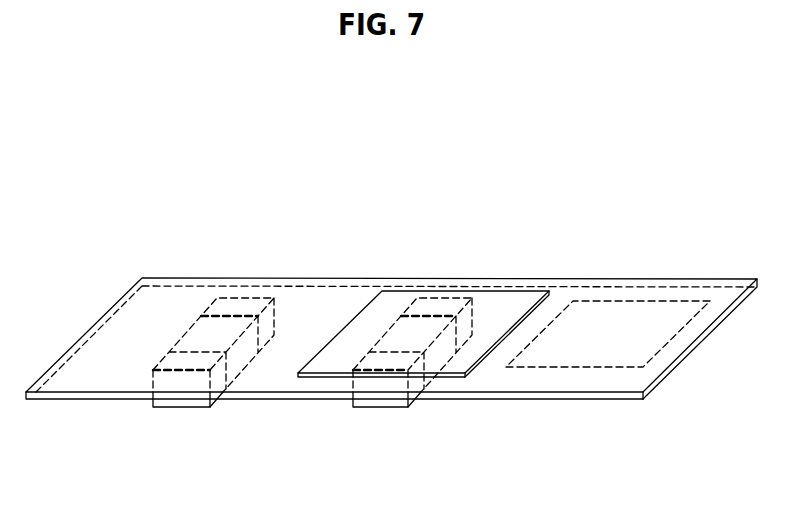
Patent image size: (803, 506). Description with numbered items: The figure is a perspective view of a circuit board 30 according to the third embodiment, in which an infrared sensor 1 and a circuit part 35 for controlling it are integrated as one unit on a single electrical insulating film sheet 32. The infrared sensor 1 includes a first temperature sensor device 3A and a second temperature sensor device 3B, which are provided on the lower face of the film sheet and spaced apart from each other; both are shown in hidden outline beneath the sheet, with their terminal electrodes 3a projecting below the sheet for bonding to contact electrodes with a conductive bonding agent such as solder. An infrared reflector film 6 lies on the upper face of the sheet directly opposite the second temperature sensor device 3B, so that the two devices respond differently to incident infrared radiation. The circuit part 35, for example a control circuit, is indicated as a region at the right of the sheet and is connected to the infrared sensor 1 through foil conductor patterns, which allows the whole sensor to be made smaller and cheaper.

The circuit board 30 is at (627, 205).
The infrared sensor 1 is at (334, 268).
The electrical insulating film sheet 32 is at (82, 402).
The first temperature sensor device 3A is at (262, 367).
The second temperature sensor device 3B is at (455, 372).
The terminal electrodes 3a is at (170, 407).
The infrared reflector film 6 is at (397, 303).
The circuit part 35 is at (598, 358).